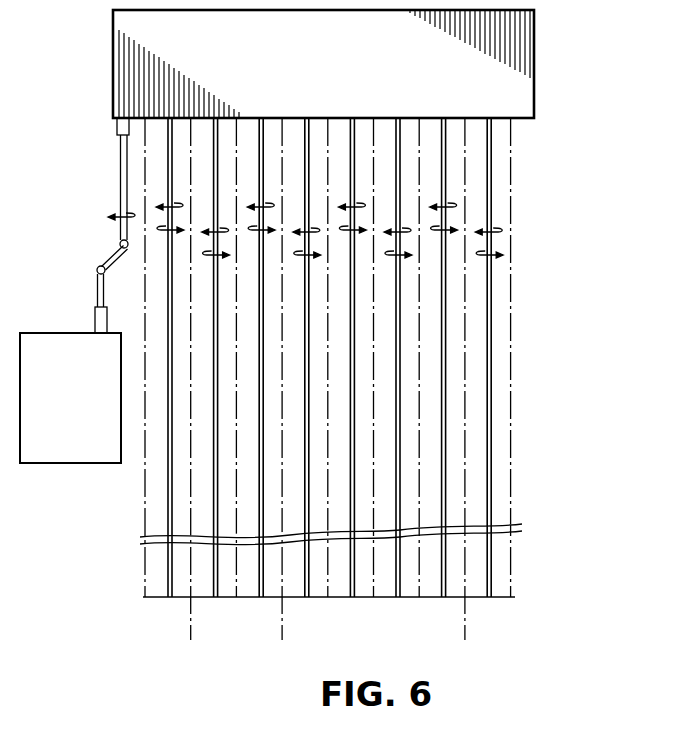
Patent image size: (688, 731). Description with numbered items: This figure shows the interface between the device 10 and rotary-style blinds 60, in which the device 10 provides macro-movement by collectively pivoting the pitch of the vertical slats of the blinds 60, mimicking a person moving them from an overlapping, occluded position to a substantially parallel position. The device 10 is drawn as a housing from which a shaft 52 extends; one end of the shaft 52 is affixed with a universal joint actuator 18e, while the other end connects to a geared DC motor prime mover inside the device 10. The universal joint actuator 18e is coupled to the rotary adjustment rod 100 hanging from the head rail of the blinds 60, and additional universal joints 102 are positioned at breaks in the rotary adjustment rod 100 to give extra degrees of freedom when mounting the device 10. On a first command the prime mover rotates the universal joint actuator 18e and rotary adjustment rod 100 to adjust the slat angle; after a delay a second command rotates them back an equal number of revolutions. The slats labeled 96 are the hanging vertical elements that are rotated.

The blinds 60 is at (375, 339).
The rotating rods 96 is at (214, 598).
The rotary adjustment rod 100 is at (117, 126).
The universal joints 102 is at (120, 243).
The universal joint actuator 18e is at (98, 286).
The shaft 52 is at (94, 318).
The device 10 is at (40, 464).